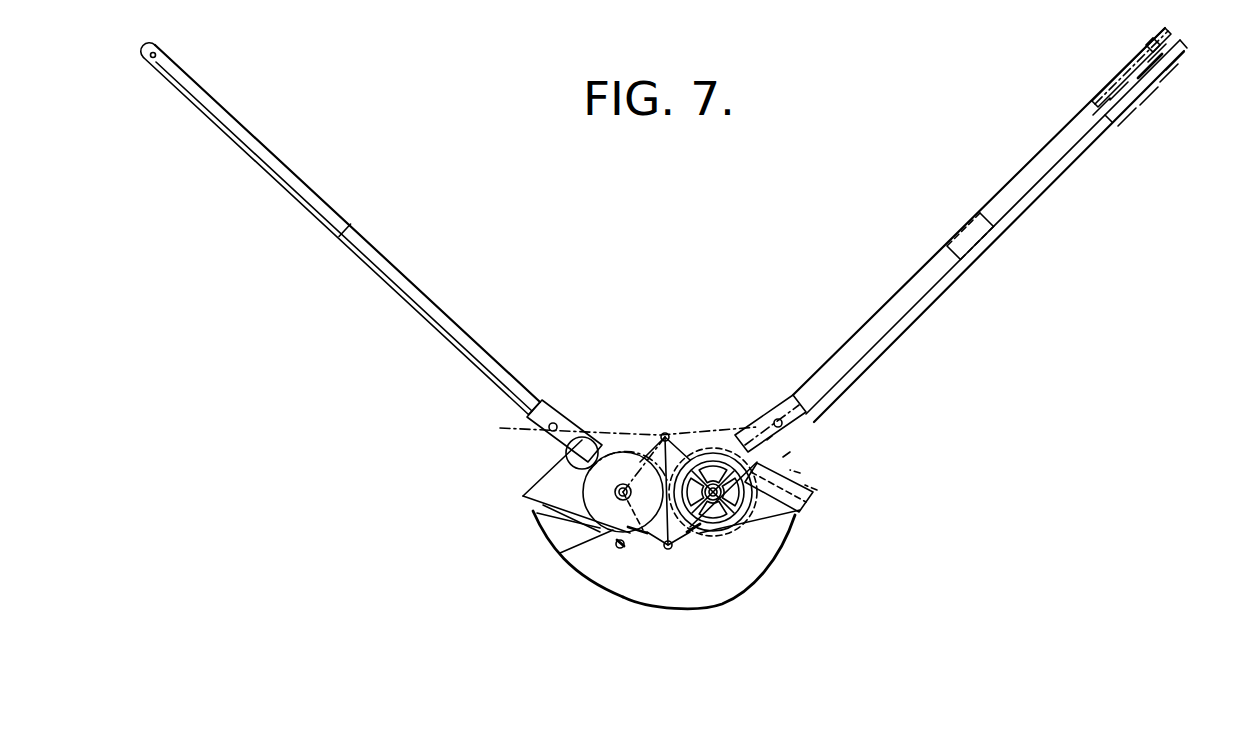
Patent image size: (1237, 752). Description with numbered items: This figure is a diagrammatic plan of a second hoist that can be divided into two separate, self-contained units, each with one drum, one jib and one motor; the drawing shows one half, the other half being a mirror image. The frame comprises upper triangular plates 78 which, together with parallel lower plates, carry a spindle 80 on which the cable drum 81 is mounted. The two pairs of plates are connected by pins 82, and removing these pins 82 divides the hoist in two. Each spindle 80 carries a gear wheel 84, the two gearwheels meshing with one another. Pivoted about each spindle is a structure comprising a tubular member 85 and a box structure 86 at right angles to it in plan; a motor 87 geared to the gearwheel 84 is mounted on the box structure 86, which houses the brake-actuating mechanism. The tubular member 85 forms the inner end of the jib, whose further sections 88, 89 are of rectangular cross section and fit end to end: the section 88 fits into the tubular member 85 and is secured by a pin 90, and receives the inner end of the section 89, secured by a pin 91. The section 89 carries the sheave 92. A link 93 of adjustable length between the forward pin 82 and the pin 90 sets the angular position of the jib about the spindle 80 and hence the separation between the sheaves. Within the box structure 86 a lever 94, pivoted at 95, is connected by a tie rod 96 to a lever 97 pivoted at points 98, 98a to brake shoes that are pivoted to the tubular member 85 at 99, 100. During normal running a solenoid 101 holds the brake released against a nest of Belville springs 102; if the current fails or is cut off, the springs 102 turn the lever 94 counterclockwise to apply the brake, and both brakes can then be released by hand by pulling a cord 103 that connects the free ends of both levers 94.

The upper triangular plate 78 is at (646, 447).
The spindle 80 is at (626, 484).
The cable drum 81 is at (613, 455).
The pin 82 is at (665, 433).
The gear wheel 84 is at (523, 496).
The tubular member 85 is at (535, 415).
The box structure 86 is at (537, 480).
The motor 87 is at (580, 442).
The jib section 88 is at (447, 327).
The jib section 89 is at (302, 193).
The pin 90 is at (572, 437).
The pin 91 is at (963, 225).
The sheave 92 is at (1164, 38).
The link of adjustable length 93 is at (585, 440).
The lever 94 is at (797, 518).
The pivot of lever 95 is at (783, 457).
The tie rod 96 is at (640, 537).
The lever 97 is at (613, 523).
The pivot point 98 is at (625, 522).
The pivot point 98a is at (875, 600).
The brake shoe pivot 99 is at (767, 440).
The brake shoe pivot 100 is at (728, 447).
The solenoid 101 is at (817, 490).
The nest of Belville springs 102 is at (800, 473).
The cord 103 is at (720, 604).